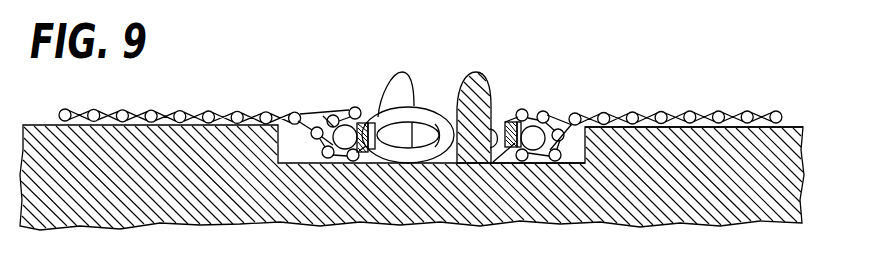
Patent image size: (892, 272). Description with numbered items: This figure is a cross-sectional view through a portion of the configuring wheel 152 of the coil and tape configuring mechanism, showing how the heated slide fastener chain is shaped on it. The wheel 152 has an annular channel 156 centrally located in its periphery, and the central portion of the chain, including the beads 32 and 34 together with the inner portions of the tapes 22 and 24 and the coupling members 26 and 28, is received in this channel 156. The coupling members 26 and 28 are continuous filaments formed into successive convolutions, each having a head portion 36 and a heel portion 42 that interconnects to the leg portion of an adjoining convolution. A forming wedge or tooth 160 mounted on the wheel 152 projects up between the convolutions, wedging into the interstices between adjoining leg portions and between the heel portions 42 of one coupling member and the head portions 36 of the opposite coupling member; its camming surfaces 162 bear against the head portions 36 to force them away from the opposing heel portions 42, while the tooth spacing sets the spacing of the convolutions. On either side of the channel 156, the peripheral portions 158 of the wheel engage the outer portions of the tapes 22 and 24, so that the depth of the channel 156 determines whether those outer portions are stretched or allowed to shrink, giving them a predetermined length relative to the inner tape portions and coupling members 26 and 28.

The tape 22 is at (213, 77).
The tape 24 is at (643, 112).
The coupling member 26 is at (429, 105).
The coupling member 28 is at (499, 113).
The bead 32 is at (343, 100).
The bead 34 is at (570, 68).
The head portion 36 is at (448, 138).
The heel portion 42 is at (367, 152).
The configuring wheel 152 is at (126, 216).
The annular channel 156 is at (565, 163).
The peripheral portion 158 is at (703, 127).
The forming teeth 160 is at (398, 99).
The camming surface 162 is at (414, 73).